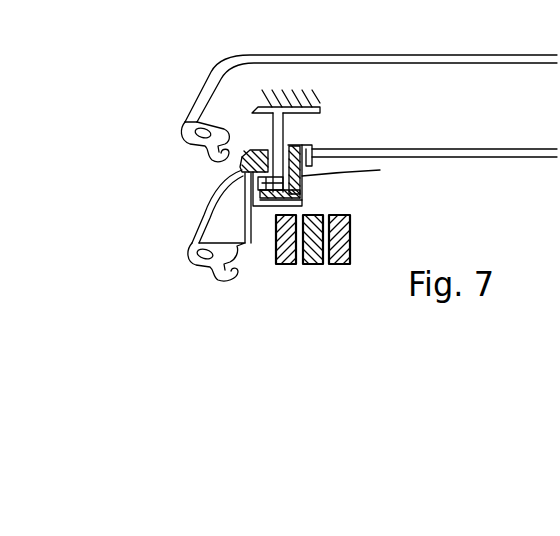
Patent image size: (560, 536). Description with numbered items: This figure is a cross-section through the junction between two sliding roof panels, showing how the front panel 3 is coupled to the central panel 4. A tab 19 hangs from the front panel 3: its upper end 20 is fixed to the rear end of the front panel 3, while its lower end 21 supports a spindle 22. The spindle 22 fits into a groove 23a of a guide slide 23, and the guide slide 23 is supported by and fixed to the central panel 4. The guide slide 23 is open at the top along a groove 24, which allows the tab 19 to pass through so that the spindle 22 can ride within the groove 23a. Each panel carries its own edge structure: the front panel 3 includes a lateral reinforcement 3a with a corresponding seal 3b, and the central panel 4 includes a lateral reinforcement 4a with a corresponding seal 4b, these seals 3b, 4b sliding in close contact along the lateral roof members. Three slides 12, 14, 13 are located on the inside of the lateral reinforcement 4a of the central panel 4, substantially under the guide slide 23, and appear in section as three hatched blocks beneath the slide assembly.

The front panel 3 is at (420, 55).
The lateral reinforcement 3a is at (199, 99).
The seal 3b is at (182, 127).
The central panel 4 is at (423, 147).
The lateral reinforcement 4a is at (203, 207).
The seal 4b is at (190, 249).
The slide 12 is at (283, 265).
The slide 13 is at (342, 265).
The slide 14 is at (308, 265).
The tab 19 is at (287, 133).
The upper end 20 is at (320, 110).
The lower end 21 is at (300, 198).
The spindle 22 is at (240, 170).
The guide slide 23 is at (300, 186).
The groove 23a is at (262, 207).
The groove 24 is at (313, 146).